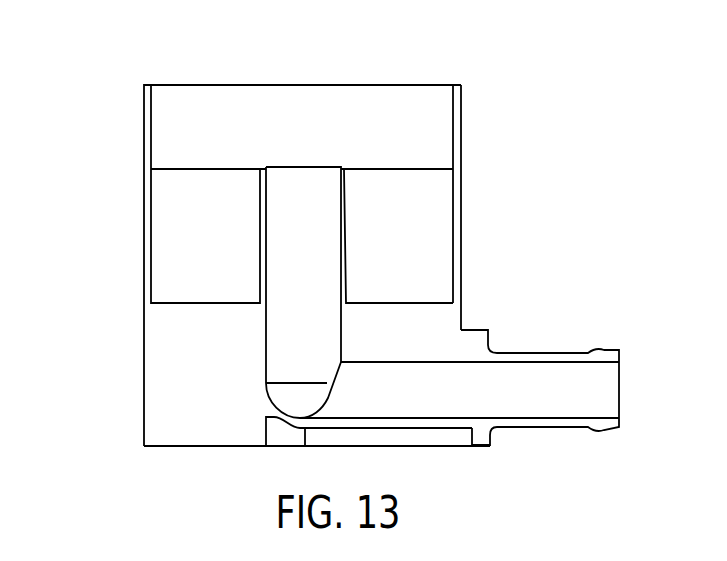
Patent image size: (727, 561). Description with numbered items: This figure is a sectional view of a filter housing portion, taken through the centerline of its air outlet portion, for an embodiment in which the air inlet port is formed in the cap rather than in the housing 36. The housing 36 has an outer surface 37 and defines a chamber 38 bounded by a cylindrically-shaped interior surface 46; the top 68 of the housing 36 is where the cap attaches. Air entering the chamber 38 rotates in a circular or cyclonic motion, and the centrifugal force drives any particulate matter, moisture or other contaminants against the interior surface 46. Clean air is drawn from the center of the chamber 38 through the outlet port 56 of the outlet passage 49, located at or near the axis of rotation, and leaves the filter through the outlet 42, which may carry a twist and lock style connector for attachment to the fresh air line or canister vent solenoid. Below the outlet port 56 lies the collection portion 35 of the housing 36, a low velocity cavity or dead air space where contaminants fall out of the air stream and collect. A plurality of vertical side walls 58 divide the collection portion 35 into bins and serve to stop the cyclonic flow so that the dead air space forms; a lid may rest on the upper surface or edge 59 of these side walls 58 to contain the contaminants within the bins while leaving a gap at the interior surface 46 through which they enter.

The top of the housing 68 is at (110, 108).
The chamber 38 is at (186, 118).
The outlet port 56 is at (342, 167).
The interior surface 46 is at (453, 147).
The housing 36 is at (515, 215).
The outlet passage 49 is at (266, 219).
The upper surface or edge of the side walls 59 is at (188, 303).
The outer surface 37 is at (148, 290).
The vertical side walls 58 is at (162, 333).
The collection portion 35 is at (165, 399).
The outlet 42 is at (595, 322).